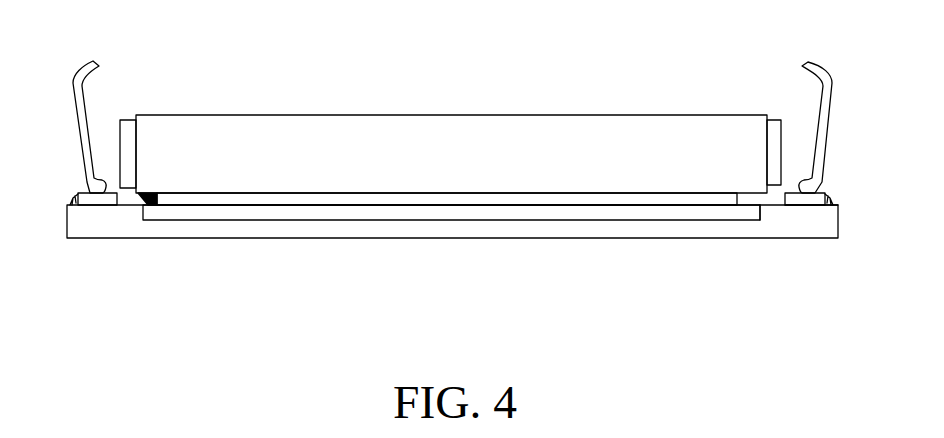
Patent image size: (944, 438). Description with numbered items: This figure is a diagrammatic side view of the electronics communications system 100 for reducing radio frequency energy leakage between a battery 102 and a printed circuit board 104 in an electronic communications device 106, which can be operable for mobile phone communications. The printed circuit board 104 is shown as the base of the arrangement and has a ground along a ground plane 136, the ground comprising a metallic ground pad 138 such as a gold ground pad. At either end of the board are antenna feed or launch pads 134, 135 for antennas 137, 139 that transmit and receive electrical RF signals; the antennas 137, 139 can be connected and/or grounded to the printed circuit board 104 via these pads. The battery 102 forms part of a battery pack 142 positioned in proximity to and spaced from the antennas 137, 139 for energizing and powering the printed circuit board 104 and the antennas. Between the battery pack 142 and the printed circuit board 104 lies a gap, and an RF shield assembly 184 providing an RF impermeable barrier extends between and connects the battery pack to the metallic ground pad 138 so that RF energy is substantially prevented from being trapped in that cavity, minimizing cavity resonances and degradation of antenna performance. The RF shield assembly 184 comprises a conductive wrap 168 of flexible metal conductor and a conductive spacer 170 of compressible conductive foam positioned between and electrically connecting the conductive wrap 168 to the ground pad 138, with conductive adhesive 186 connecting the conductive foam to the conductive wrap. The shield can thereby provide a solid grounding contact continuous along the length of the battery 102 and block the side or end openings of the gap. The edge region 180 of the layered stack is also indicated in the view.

The electronics communications system 100 is at (657, 73).
The battery 102 is at (130, 115).
The printed circuit board 104 is at (712, 225).
The electronic communications device 106 is at (180, 248).
The antenna feed or launch pad 134 is at (75, 193).
The antenna feed or launch pad 135 is at (827, 195).
The ground plane 136 is at (790, 205).
The antenna 137 is at (91, 62).
The metallic ground pad 138 is at (450, 213).
The antenna 139 is at (812, 66).
The battery pack 142 is at (775, 118).
The conductive wrap 168 is at (373, 113).
The conductive spacer 170 is at (645, 198).
The gap / edge of interposer 180 is at (747, 205).
The RF shield assembly 184 is at (148, 199).
The conductive adhesive 186 is at (538, 193).